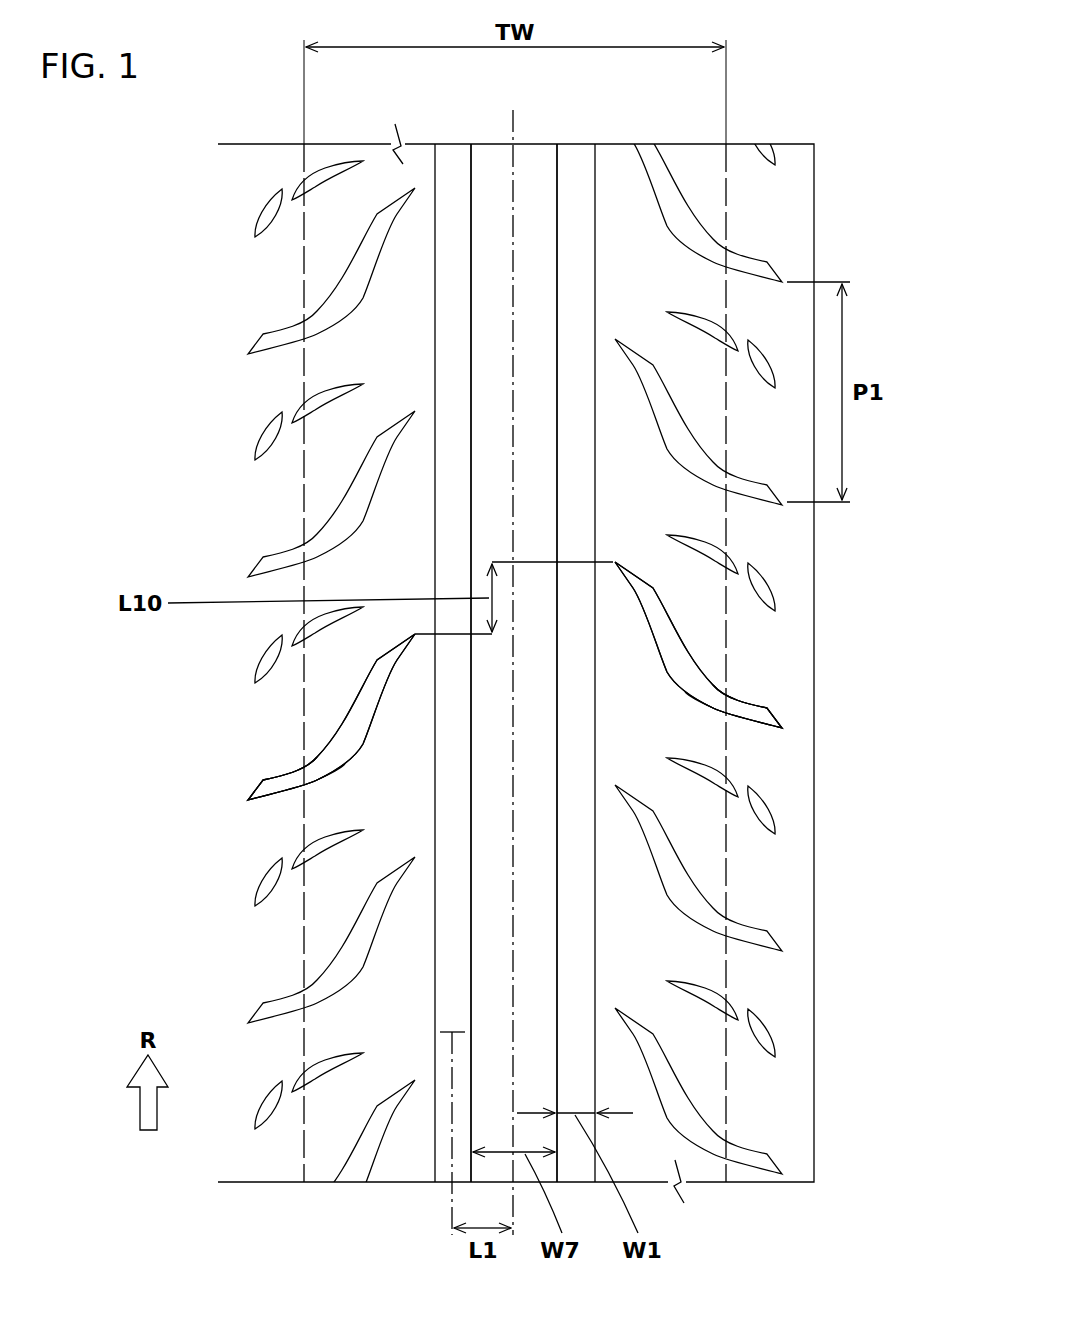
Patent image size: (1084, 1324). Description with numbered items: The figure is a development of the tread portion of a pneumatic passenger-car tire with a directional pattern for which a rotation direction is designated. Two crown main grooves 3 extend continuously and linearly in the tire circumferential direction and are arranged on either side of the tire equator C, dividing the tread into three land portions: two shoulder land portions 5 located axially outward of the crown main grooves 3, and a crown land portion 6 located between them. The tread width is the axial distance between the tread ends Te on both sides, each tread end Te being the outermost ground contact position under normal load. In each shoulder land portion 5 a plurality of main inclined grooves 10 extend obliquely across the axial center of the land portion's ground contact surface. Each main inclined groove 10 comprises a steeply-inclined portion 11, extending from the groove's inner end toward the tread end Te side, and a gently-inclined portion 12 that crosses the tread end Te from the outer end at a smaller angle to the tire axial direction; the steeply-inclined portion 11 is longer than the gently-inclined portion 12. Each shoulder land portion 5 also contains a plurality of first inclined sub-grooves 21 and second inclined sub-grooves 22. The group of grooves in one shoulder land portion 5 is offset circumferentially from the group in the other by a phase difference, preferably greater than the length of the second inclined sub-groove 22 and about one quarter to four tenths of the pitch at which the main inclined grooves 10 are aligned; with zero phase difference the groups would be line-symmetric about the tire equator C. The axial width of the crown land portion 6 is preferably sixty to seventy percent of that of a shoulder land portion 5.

The crown main groove 3 is at (454, 186).
The shoulder land portion 5 is at (350, 208).
The crown land portion 6 is at (494, 186).
The main inclined groove 10 is at (350, 289).
The steeply-inclined portion 11 is at (353, 712).
The gently-inclined portion 12 is at (278, 786).
The first inclined sub-groove 21 is at (321, 399).
The second inclined sub-groove 22 is at (261, 437).
The tire equator C is at (515, 661).
The tread end Te is at (304, 163).